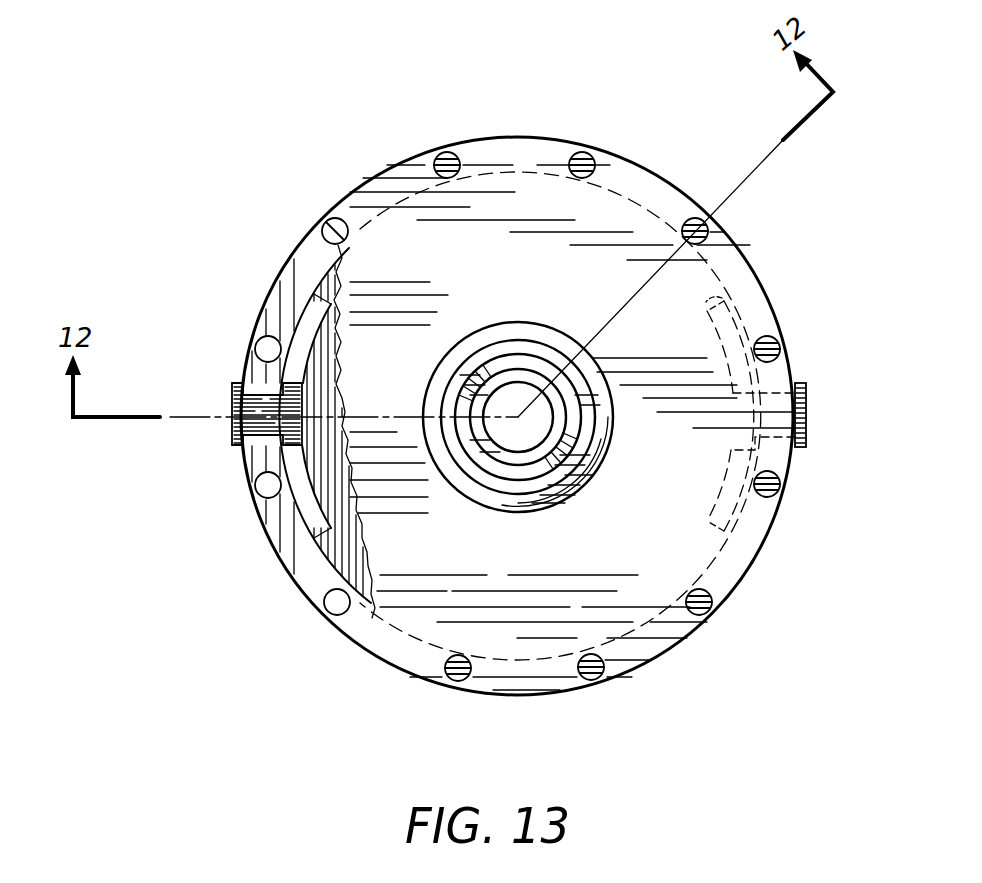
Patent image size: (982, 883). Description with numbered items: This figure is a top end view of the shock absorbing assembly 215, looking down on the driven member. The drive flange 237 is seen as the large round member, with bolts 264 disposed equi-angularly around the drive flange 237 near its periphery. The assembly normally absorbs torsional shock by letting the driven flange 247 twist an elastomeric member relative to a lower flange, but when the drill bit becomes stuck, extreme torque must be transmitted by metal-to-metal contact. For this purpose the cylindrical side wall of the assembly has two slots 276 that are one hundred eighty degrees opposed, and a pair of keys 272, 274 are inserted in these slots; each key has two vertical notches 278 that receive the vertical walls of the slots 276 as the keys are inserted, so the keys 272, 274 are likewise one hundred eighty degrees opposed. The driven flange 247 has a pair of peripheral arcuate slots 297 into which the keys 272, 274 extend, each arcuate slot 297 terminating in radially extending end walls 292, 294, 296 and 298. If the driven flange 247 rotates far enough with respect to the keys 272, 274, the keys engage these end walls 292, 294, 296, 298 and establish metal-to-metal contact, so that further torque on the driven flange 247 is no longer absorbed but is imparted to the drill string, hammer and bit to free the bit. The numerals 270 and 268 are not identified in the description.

The shock absorbing assembly 215 is at (346, 132).
The bolts 264 is at (592, 150).
The flange ring 270 is at (312, 250).
The end wall 292 is at (331, 304).
The end wall 294 is at (313, 522).
The end wall 298 is at (300, 343).
The vertical notch 278 is at (243, 398).
The key 272 is at (232, 425).
The slot 276 is at (243, 478).
The segment end 268 is at (310, 580).
The driven flange 247 is at (368, 627).
The end wall 296 is at (745, 290).
The peripheral arcuate slot 297 is at (727, 300).
The drive flange 237 is at (682, 535).
The key 274 is at (806, 440).